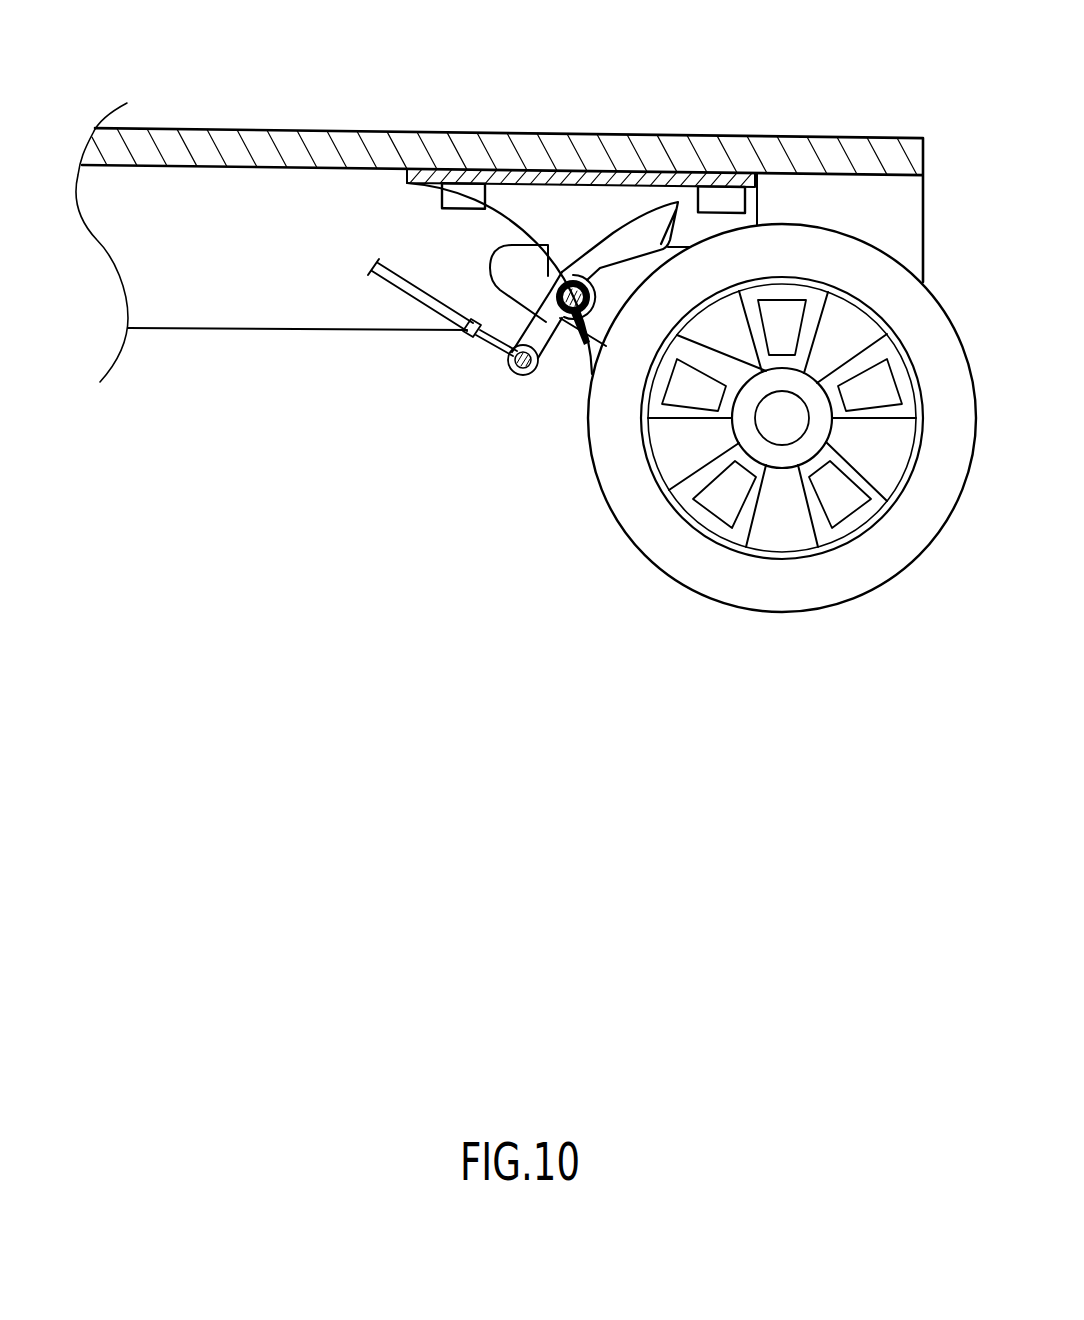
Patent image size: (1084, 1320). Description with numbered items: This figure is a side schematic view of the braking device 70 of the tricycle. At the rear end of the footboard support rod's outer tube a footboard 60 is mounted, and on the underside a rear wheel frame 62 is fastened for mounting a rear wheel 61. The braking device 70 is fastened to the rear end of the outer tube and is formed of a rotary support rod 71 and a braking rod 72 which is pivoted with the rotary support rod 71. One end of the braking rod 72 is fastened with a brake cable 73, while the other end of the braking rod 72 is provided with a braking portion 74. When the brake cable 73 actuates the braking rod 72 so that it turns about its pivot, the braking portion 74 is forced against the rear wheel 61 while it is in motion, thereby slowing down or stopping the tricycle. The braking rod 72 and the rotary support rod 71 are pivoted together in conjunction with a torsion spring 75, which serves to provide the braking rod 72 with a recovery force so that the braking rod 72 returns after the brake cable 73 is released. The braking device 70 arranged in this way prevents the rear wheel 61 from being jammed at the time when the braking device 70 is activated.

The footboard 60 is at (320, 130).
The rear wheel 61 is at (797, 592).
The rear wheel frame 62 is at (580, 205).
The braking device 70 is at (483, 378).
The rotary support rod 71 is at (574, 340).
The braking rod 72 is at (613, 247).
The brake cable 73 is at (487, 338).
The braking portion 74 is at (695, 178).
The torsion spring 75 is at (571, 276).